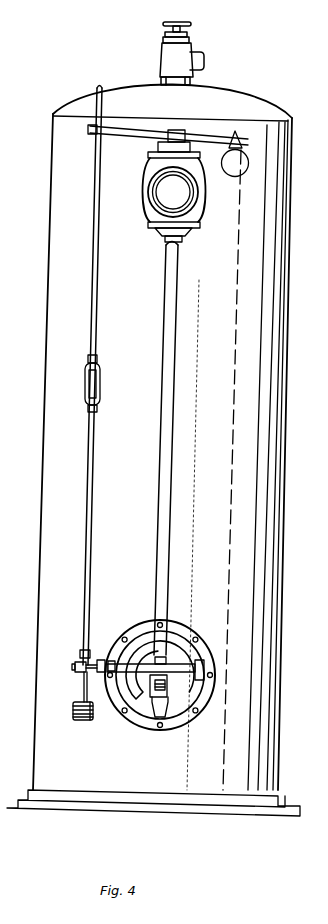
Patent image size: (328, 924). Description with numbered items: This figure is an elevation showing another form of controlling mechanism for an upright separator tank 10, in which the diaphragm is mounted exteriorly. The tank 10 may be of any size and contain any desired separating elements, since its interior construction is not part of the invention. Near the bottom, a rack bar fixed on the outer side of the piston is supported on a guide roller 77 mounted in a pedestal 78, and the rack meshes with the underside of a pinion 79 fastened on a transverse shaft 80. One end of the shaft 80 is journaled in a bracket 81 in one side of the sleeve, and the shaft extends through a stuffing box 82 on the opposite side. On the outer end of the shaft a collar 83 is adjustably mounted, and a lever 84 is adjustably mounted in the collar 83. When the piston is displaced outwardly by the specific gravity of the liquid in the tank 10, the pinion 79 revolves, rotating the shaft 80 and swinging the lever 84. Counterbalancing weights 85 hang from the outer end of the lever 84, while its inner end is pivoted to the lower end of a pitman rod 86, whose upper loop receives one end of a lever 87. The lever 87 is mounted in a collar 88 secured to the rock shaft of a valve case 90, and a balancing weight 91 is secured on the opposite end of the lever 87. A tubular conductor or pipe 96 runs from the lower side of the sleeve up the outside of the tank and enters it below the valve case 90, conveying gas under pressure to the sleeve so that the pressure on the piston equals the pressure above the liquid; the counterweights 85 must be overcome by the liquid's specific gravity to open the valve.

The upright separator tank 10 is at (277, 476).
The guide roller 77 is at (170, 686).
The pedestal 78 is at (165, 712).
The pinion 79 is at (128, 650).
The transverse shaft 80 is at (168, 675).
The bracket 81 is at (206, 675).
The stuffing box 82 is at (104, 658).
The collar 83 is at (77, 669).
The lever 84 is at (81, 654).
The counterbalancing weights 85 is at (86, 722).
The pitman rod 86 is at (88, 463).
The lever 87 is at (130, 128).
The collar 88 is at (175, 128).
The valve case 90 is at (202, 202).
The balancing weight 91 is at (244, 172).
The tubular conductor or pipe 96 is at (166, 482).